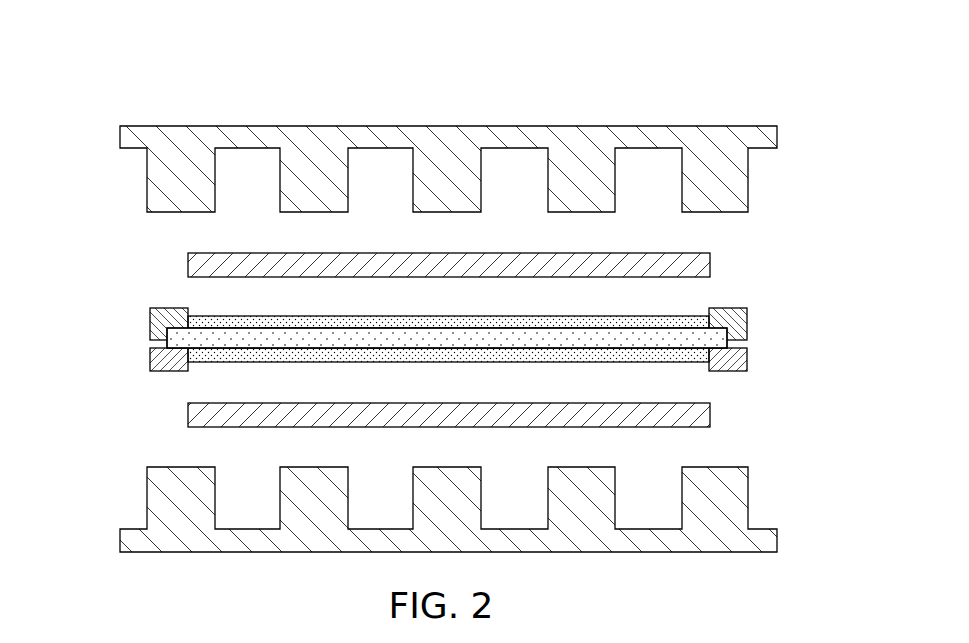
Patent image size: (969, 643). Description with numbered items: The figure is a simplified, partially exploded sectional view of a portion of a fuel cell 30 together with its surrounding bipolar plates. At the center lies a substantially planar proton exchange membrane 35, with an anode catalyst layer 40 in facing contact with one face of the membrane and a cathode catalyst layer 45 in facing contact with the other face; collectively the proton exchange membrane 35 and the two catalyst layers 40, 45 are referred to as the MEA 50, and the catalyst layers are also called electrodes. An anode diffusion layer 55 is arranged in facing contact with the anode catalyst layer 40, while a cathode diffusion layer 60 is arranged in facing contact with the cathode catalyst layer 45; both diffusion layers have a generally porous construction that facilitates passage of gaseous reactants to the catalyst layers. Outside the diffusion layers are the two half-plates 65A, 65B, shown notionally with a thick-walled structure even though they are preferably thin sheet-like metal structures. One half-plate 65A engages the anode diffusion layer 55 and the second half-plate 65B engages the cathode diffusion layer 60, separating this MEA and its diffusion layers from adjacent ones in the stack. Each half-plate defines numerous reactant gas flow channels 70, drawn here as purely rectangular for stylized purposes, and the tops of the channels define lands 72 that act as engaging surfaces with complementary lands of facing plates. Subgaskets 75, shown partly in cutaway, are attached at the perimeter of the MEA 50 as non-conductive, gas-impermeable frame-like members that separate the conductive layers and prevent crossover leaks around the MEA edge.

The fuel cell 30 is at (605, 100).
The half-plate 65A is at (786, 132).
The half-plate 65B is at (120, 538).
The reactant gas flow channels 70 is at (232, 197).
The lands 72 is at (742, 234).
The anode diffusion layer 55 is at (188, 269).
The cathode diffusion layer 60 is at (188, 418).
The MEA 50 is at (450, 340).
The subgaskets 75 is at (150, 318).
The anode catalyst layer 40 is at (292, 316).
The cathode catalyst layer 45 is at (292, 362).
The proton exchange membrane 35 is at (167, 345).